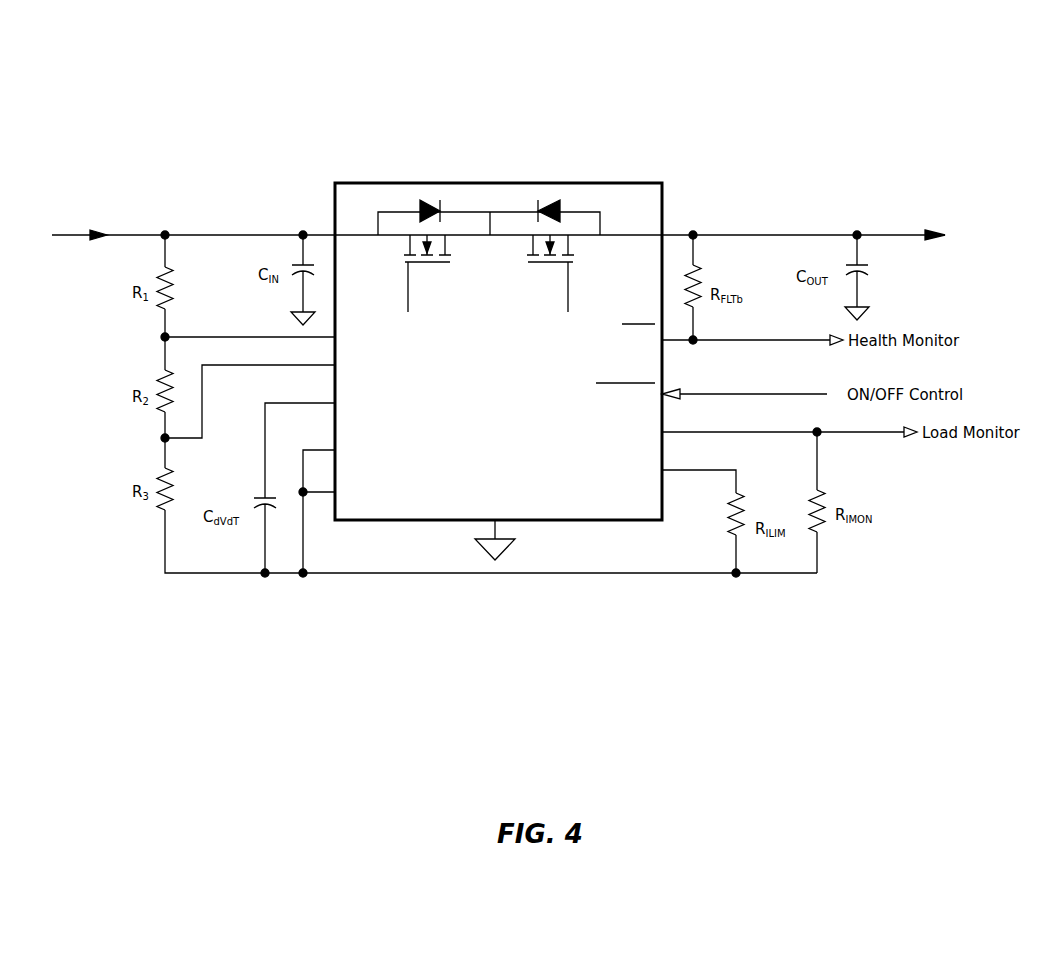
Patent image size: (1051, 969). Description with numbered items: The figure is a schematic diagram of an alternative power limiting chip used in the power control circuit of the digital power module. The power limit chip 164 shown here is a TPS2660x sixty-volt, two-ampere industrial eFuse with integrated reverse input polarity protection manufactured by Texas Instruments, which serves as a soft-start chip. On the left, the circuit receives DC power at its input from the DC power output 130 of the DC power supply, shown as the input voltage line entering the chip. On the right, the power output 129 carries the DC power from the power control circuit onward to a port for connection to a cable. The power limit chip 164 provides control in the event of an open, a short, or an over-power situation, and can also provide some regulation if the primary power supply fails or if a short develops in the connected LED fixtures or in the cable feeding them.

The DC power output 130 is at (88, 178).
The power limit chip 164 is at (537, 88).
The power output 129 is at (915, 199).